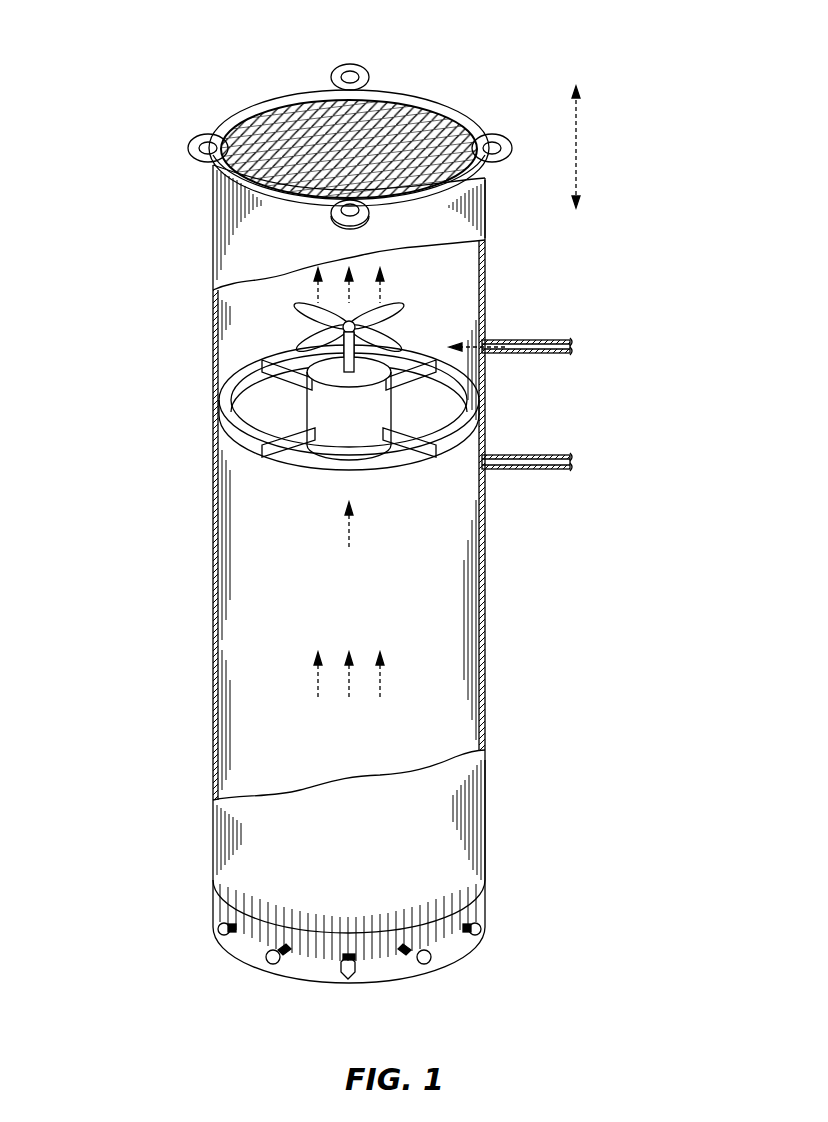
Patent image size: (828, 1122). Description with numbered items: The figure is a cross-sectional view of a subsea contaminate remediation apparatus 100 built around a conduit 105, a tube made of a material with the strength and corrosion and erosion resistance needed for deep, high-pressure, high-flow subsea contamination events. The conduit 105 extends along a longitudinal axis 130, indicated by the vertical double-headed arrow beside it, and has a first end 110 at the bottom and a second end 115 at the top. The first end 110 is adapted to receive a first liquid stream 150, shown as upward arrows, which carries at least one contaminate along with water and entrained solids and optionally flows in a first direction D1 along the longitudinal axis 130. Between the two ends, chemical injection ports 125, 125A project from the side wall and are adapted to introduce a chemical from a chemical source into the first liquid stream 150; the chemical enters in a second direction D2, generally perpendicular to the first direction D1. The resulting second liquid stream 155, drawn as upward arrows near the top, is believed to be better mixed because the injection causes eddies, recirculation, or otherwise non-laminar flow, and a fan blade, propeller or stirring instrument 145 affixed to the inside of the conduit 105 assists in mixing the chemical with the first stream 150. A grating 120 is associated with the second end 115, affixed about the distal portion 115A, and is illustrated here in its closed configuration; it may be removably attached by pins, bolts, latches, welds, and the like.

The subsea contaminate remediation apparatus 100 is at (148, 42).
The conduit 105 is at (212, 535).
The first end 110 is at (486, 686).
The second end 115 is at (487, 254).
The distal portion 115A is at (474, 187).
The grating 120 is at (398, 115).
The chemical injection port 125 is at (512, 355).
The chemical injection port 125A is at (514, 476).
The longitudinal axis 130 is at (578, 148).
The fan blade, propeller or stirring instrument 145 is at (306, 316).
The first liquid stream 150 is at (381, 686).
The second liquid stream 155 is at (383, 293).
The first direction D1 is at (347, 535).
The second direction D2 is at (486, 340).